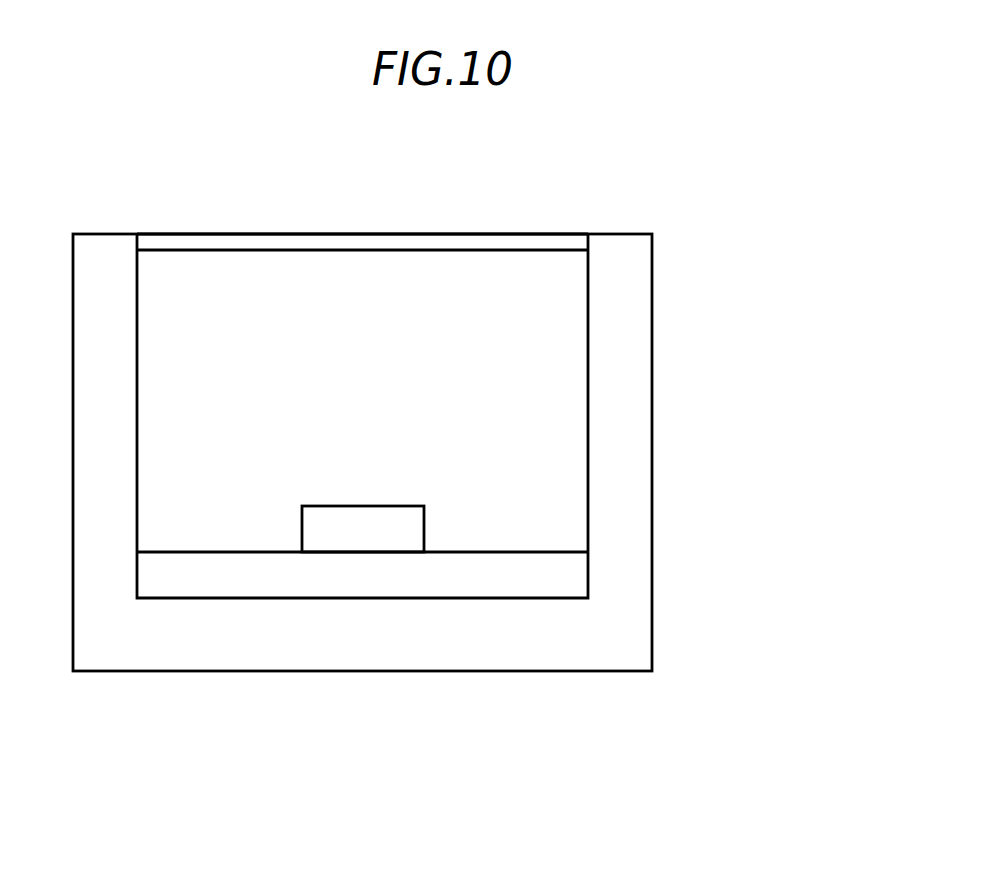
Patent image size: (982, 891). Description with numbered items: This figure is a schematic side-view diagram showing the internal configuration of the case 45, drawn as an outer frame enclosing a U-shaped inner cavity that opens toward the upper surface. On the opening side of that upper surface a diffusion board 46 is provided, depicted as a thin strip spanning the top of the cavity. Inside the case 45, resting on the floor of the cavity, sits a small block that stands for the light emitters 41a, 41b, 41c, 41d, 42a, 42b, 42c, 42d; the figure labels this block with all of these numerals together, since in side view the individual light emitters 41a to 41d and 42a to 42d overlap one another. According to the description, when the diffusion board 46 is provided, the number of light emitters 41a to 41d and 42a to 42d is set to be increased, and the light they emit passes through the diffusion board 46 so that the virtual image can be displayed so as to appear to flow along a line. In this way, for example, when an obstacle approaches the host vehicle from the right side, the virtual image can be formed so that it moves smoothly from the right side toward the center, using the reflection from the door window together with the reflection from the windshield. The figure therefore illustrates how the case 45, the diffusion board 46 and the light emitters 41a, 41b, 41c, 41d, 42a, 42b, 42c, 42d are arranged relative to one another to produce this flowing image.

The case 45 is at (637, 410).
The diffusion board 46 is at (505, 234).
The light emitter 41a is at (491, 639).
The light emitter 41b is at (363, 529).
The light emitter 41c is at (363, 529).
The light emitter 41d is at (363, 529).
The light emitter 42a is at (363, 529).
The light emitter 42b is at (363, 529).
The light emitter 42c is at (363, 529).
The light emitter 42d is at (424, 528).